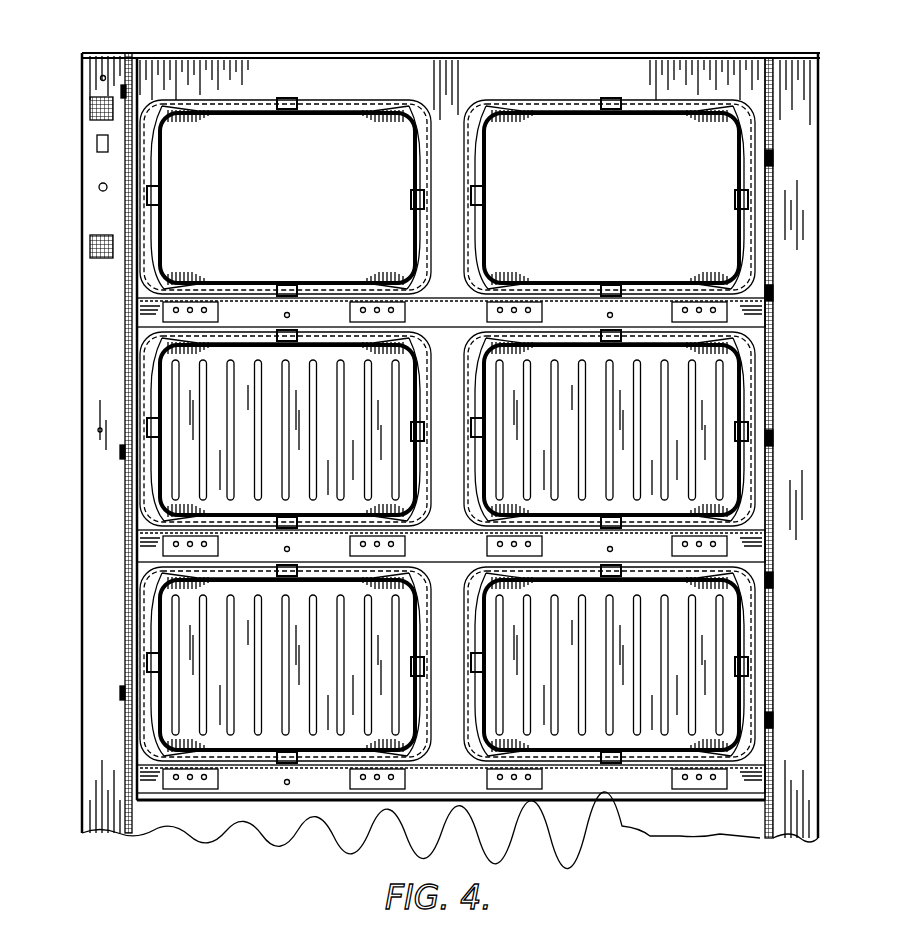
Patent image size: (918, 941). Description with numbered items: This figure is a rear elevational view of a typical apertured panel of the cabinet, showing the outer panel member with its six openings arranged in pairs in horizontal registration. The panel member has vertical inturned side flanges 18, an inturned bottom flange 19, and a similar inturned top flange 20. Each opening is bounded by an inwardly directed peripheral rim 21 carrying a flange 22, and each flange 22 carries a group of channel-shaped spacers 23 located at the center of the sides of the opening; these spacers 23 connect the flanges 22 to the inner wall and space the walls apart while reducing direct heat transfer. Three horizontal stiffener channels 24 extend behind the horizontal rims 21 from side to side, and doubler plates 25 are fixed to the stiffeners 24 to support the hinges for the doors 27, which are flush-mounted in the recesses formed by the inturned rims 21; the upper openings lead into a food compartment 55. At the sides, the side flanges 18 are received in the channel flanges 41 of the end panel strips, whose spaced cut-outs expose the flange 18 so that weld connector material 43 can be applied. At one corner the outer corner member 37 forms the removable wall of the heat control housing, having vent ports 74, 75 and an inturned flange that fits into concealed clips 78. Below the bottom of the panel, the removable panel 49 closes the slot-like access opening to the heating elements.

The side flange 18 is at (125, 348).
The bottom flange 19 is at (462, 798).
The top flange 20 is at (462, 60).
The peripheral rim 21 is at (365, 100).
The flange 22 is at (330, 114).
The channel-shaped spacer 23 is at (283, 100).
The horizontal stiffener channel 24 is at (137, 307).
The doubler plate 25 is at (218, 313).
The door 27 is at (447, 547).
The outer corner member 37 is at (82, 398).
The channel flange 41 is at (125, 60).
The weld connector material 43 is at (773, 160).
The removable panel 49 is at (632, 824).
The food compartment 55 is at (449, 198).
The vent port 74 is at (90, 246).
The vent port 75 is at (90, 112).
The clip 78 is at (132, 92).